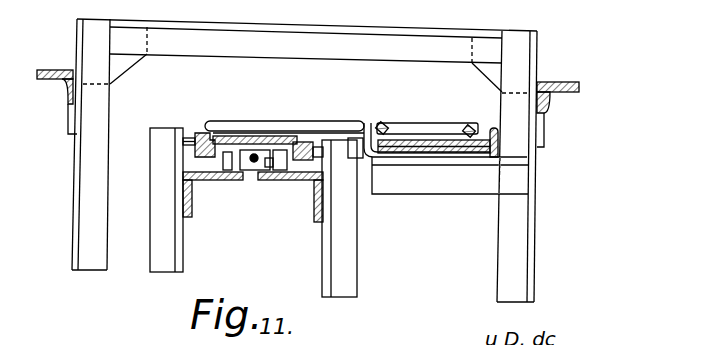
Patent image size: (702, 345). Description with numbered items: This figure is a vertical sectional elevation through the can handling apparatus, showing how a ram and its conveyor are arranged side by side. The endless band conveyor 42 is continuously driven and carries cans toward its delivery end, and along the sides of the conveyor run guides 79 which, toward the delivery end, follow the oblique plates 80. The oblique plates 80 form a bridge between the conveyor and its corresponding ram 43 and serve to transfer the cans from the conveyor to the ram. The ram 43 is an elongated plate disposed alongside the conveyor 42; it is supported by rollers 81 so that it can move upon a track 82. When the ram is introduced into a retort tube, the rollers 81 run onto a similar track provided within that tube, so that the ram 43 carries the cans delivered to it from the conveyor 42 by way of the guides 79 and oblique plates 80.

The guides 79 is at (207, 121).
The ram 43 is at (262, 139).
The oblique plates 80 is at (348, 141).
The rollers 81 is at (271, 177).
The track 82 is at (300, 178).
The endless band conveyor 42 is at (436, 152).